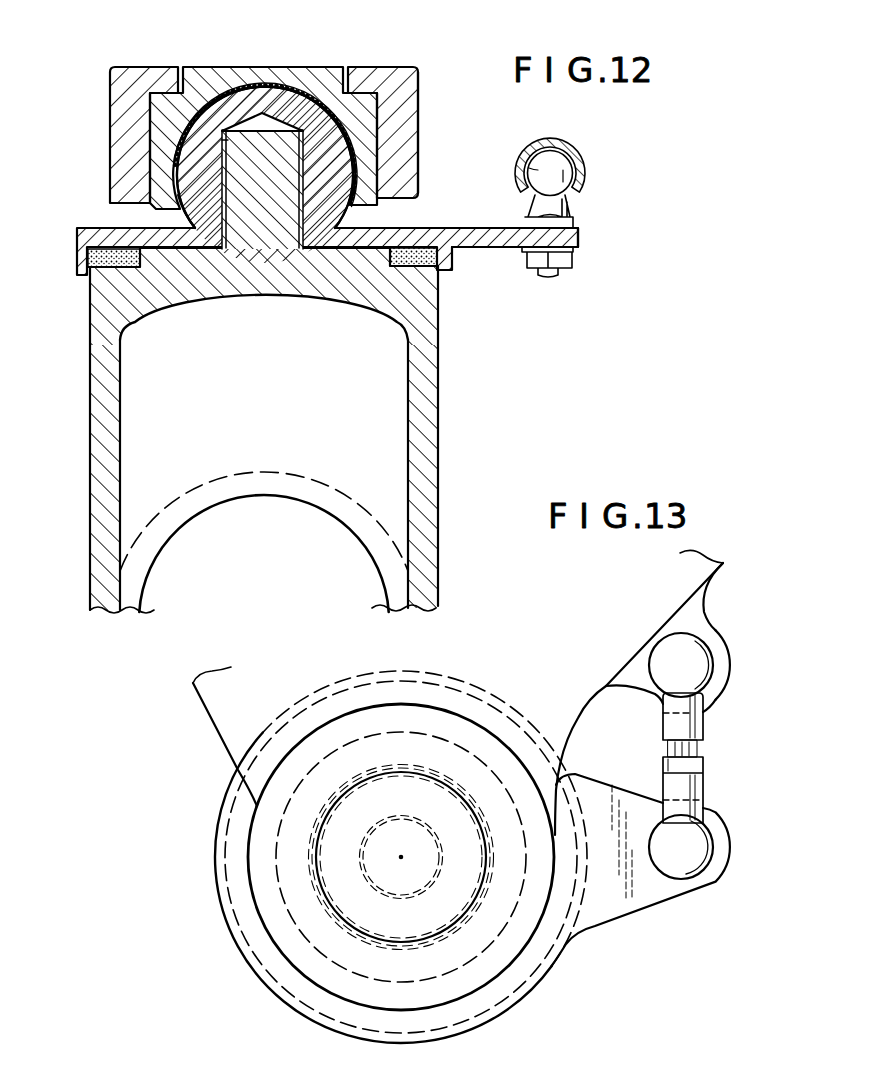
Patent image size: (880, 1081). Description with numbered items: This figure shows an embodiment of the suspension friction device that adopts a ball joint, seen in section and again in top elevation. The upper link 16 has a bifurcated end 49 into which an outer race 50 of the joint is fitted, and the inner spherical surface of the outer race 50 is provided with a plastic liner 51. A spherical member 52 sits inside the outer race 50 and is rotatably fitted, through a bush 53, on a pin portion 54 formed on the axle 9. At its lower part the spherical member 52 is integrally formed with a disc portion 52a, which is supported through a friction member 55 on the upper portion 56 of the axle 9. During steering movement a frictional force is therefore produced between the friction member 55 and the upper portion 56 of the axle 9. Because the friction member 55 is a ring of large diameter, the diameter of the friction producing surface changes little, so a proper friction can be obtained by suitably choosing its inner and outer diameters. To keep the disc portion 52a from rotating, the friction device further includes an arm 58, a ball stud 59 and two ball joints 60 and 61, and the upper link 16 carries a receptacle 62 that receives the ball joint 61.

In FIG. 12, the axle 9 is at (425, 557).
In FIG. 12, the upper link 16 is at (420, 111).
In FIG. 13, the upper link 16 is at (666, 594).
In FIG. 12, the bifurcated end 49 is at (393, 73).
In FIG. 13, the bifurcated end 49 is at (272, 813).
In FIG. 12, the outer race 50 is at (327, 73).
In FIG. 13, the outer race 50 is at (336, 876).
In FIG. 12, the plastic liner 51 is at (248, 84).
In FIG. 12, the spherical member 52 is at (195, 165).
In FIG. 12, the disc portion 52a is at (133, 233).
In FIG. 12, the bush 53 is at (227, 200).
In FIG. 12, the pin portion 54 is at (230, 140).
In FIG. 12, the friction member 55 is at (107, 263).
In FIG. 12, the upper portion of the axle 56 is at (418, 294).
In FIG. 12, the arm 58 is at (500, 235).
In FIG. 13, the arm 58 is at (650, 888).
In FIG. 12, the ball stud 59 is at (528, 170).
In FIG. 12, the ball joint 60 is at (548, 142).
In FIG. 13, the ball joint 60 is at (688, 793).
In FIG. 13, the ball joint 61 is at (688, 726).
In FIG. 13, the receptacle 62 is at (693, 631).